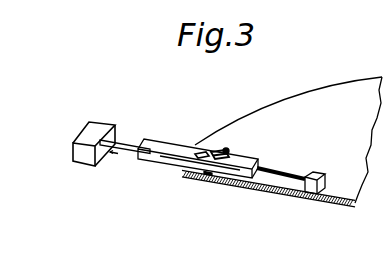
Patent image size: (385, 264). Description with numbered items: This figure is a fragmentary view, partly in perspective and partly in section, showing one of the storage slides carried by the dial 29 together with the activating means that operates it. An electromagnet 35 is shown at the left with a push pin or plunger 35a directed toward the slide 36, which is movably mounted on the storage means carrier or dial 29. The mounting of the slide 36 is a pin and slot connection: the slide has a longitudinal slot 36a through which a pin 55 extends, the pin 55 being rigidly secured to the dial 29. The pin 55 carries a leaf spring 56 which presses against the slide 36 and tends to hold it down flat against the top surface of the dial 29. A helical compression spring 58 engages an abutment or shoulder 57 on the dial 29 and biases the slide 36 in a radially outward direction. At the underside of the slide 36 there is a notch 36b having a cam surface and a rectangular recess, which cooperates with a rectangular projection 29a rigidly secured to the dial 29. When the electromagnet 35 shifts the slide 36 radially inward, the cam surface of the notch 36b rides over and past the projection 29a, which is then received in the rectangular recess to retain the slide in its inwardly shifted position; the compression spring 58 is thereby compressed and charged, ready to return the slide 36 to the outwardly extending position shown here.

The dial 29 is at (305, 103).
The rectangular projection 29a is at (225, 184).
The electromagnet 35 is at (86, 153).
The push pin or plunger 35a is at (121, 142).
The slide 36 is at (157, 161).
The longitudinal slot 36a is at (198, 166).
The notch 36b is at (217, 181).
The pin 55 is at (233, 157).
The leaf spring 56 is at (215, 150).
The abutment or shoulder 57 is at (306, 196).
The helical compression spring 58 is at (301, 175).